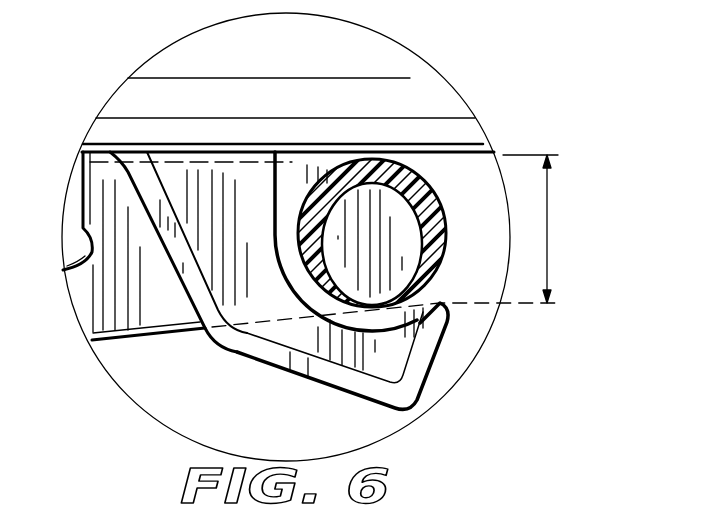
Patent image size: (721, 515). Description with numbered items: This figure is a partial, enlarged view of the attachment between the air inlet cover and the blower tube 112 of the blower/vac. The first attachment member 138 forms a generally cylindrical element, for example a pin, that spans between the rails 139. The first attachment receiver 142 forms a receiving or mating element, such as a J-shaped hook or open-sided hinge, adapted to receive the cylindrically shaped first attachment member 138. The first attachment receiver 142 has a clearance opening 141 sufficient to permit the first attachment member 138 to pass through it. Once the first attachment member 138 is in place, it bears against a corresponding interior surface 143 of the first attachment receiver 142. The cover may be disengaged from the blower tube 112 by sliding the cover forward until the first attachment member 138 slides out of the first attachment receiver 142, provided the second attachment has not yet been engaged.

The blower tube 112 is at (330, 60).
The first attachment member 138 is at (428, 182).
The rails 139 is at (136, 340).
The clearance opening 141 is at (548, 232).
The first attachment receiver 142 is at (412, 412).
The interior surface 143 is at (311, 268).